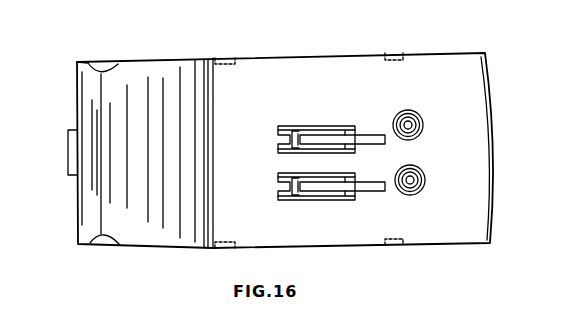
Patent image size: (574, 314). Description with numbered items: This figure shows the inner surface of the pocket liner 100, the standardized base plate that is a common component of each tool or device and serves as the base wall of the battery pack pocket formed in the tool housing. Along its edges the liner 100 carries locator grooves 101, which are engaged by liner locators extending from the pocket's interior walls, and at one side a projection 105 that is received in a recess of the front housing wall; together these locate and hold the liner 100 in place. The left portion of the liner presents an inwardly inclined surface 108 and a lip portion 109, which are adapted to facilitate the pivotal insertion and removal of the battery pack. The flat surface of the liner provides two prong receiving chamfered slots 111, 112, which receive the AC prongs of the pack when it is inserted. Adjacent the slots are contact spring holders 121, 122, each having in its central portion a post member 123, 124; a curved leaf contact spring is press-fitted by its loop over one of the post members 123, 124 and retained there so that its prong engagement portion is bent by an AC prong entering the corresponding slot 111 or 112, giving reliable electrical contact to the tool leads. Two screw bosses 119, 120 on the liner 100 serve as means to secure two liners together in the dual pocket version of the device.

The pocket liner 100 is at (323, 54).
The locator grooves 101 is at (225, 55).
The projection 105 is at (70, 133).
The inwardly inclined surface 108 is at (167, 70).
The lip portion 109 is at (88, 93).
The prong receiving chamfered slot 111 is at (372, 133).
The prong receiving chamfered slot 112 is at (370, 191).
The screw boss 119 is at (423, 182).
The screw boss 120 is at (422, 127).
The contact spring holder 121 is at (313, 197).
The contact spring holder 122 is at (318, 132).
The post member 123 is at (282, 186).
The post member 124 is at (280, 143).